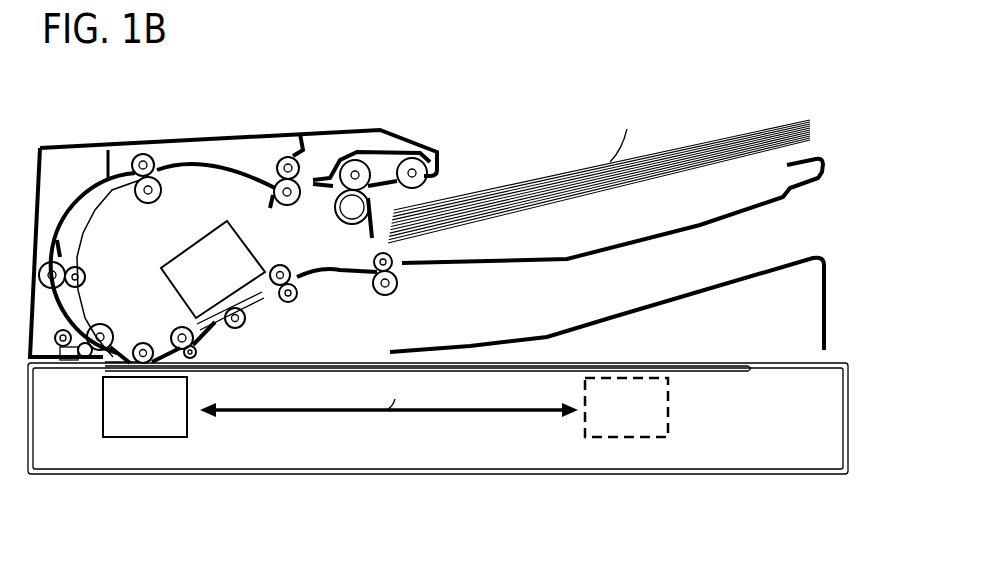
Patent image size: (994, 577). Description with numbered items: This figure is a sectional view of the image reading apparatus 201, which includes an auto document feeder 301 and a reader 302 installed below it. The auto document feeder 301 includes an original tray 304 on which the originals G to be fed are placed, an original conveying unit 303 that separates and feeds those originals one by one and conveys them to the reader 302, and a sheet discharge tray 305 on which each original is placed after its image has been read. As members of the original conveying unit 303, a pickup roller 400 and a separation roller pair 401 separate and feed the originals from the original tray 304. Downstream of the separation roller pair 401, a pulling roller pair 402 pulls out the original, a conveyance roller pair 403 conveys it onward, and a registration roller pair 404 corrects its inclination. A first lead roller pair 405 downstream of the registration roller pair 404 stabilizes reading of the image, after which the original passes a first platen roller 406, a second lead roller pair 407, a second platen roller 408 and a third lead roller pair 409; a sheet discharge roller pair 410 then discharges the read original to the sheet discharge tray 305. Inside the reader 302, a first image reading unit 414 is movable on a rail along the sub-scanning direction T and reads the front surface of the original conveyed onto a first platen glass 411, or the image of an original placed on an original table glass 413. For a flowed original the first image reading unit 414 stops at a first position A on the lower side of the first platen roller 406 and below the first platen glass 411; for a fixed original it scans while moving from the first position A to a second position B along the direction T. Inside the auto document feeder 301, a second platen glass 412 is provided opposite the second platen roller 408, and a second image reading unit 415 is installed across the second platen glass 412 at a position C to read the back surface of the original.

The image reading apparatus 201 is at (578, 97).
The auto document feeder 301 is at (217, 132).
The reader 302 is at (752, 477).
The original conveying unit 303 is at (87, 185).
The original tray 304 is at (792, 175).
The sheet discharge tray 305 is at (745, 273).
The pickup roller 400 is at (410, 160).
The separation roller pair 401 is at (343, 225).
The pulling roller pair 402 is at (287, 157).
The conveyance roller pair 403 is at (143, 157).
The registration roller pair 404 is at (50, 263).
The first lead roller pair 405 is at (102, 322).
The first platen roller 406 is at (150, 346).
The second lead roller pair 407 is at (200, 351).
The second platen roller 408 is at (245, 322).
The third lead roller pair 409 is at (275, 265).
The sheet discharge roller pair 410 is at (378, 297).
The first platen glass 411 is at (127, 367).
The second platen glass 412 is at (235, 300).
The original table glass 413 is at (685, 365).
The first image reading unit 414 is at (103, 427).
The second image reading unit 415 is at (208, 225).